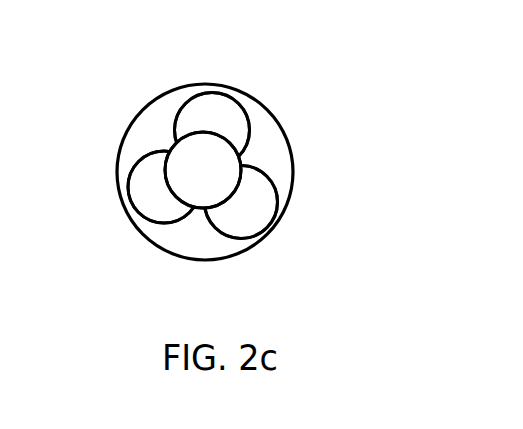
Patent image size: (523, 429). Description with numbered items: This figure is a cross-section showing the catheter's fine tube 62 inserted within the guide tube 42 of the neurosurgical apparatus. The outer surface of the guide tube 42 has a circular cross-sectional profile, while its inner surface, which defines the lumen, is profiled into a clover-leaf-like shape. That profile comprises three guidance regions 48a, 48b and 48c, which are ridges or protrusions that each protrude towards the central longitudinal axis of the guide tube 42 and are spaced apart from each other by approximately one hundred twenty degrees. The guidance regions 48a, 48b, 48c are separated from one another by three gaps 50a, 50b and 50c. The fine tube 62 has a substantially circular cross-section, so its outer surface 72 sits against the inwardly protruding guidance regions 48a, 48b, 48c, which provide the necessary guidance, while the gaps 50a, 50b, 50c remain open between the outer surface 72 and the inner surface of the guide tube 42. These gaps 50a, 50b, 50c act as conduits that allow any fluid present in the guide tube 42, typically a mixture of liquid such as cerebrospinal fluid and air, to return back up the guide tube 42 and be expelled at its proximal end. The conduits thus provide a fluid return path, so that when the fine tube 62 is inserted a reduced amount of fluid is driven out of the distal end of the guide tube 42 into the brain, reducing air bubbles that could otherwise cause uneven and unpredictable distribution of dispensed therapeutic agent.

The guide tube 42 is at (274, 246).
The guidance region 48a is at (250, 170).
The guidance region 48b is at (184, 134).
The guidance region 48c is at (182, 207).
The gap 50a is at (206, 118).
The gap 50b is at (146, 183).
The gap 50c is at (255, 200).
The fine tube 62 is at (218, 168).
The outer surface 72 is at (218, 133).